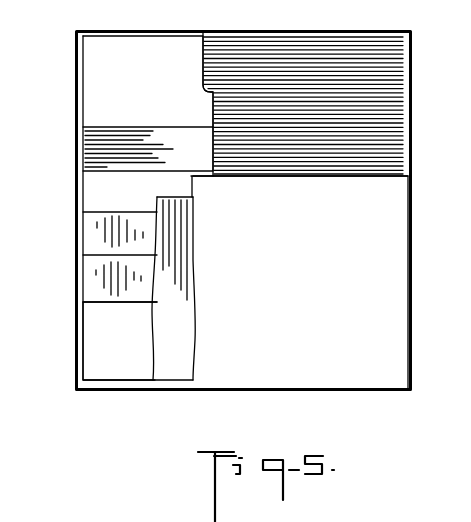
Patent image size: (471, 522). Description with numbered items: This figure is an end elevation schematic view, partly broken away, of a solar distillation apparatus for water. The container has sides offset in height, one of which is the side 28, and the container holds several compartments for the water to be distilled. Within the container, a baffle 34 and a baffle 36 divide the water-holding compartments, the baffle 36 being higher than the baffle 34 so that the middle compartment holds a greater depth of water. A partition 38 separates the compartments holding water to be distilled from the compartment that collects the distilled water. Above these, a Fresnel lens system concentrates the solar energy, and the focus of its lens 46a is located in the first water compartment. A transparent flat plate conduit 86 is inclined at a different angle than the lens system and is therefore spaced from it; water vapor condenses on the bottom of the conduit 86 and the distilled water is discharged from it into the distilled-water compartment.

The side 28 is at (378, 228).
The baffle 34 is at (93, 236).
The baffle 36 is at (92, 353).
The partition 38 is at (175, 370).
The lens 46a is at (360, 42).
The transparent flat plate conduit 86 is at (100, 144).